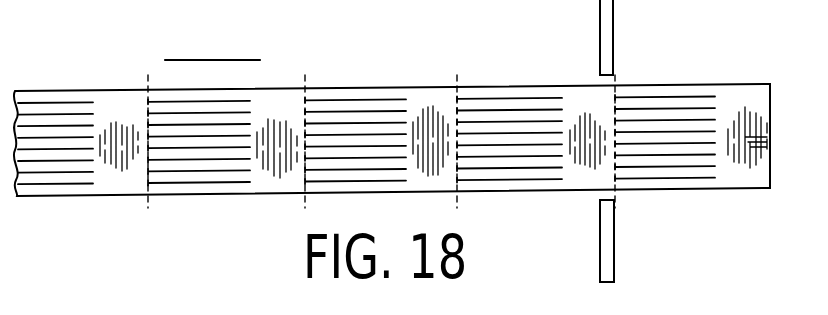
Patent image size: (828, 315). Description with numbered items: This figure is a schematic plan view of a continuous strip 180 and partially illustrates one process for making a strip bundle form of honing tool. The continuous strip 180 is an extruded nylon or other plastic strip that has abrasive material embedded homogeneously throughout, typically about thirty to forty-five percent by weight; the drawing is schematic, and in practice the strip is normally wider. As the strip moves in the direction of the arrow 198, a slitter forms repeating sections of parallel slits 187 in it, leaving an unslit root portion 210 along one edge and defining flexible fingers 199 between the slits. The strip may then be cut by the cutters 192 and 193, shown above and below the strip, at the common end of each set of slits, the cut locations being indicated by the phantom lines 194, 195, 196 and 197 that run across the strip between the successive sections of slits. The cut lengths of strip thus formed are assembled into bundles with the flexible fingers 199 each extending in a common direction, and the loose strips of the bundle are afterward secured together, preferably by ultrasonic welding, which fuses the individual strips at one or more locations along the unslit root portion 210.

The continuous strip 180 is at (428, 74).
The series of parallel slits 187 is at (195, 204).
The cutter 192 is at (612, 30).
The cutter 193 is at (614, 256).
The phantom line 194 is at (613, 158).
The phantom line 195 is at (455, 157).
The phantom line 196 is at (297, 168).
The phantom line 197 is at (148, 148).
The arrow 198 is at (226, 58).
The flexible fingers 199 is at (668, 108).
The unslit root portion 210 is at (745, 138).